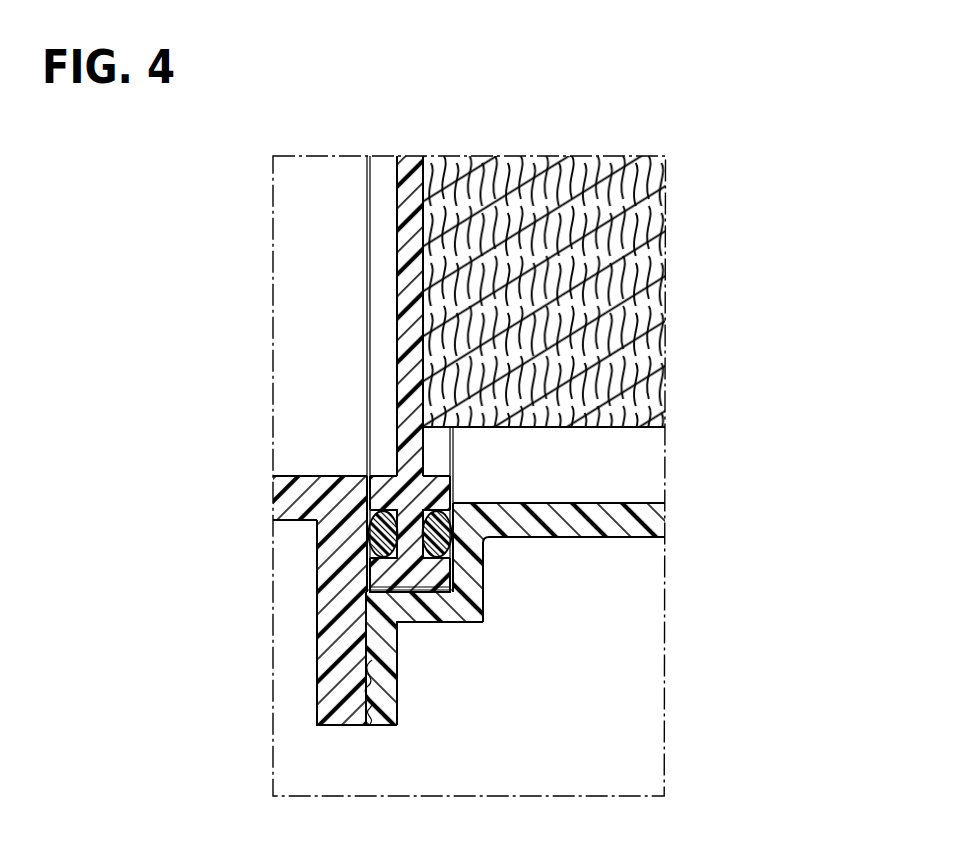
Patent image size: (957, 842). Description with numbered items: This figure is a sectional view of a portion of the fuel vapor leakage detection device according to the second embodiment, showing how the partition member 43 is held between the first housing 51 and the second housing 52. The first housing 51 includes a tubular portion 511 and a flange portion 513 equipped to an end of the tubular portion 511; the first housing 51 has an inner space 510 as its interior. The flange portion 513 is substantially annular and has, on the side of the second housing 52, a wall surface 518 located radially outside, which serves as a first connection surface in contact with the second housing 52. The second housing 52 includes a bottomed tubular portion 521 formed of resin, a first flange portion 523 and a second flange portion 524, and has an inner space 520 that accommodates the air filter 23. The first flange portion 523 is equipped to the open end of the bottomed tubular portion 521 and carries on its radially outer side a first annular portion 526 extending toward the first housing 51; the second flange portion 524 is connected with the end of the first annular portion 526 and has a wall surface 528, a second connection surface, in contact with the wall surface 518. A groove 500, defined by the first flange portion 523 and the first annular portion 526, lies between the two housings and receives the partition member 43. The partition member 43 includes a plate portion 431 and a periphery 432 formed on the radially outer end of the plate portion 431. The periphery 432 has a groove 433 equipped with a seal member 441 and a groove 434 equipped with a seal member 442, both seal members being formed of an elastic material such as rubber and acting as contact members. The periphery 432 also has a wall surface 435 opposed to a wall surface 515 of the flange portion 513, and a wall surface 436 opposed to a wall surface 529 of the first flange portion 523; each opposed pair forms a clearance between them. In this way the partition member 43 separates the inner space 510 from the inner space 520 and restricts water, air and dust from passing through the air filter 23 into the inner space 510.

The air filter 23 is at (641, 266).
The partition member 43 is at (392, 185).
The plate portion 431 is at (397, 310).
The periphery 432 is at (369, 476).
The groove 433 is at (368, 536).
The groove 434 is at (446, 520).
The wall surface 435 is at (365, 567).
The wall surface 436 is at (453, 578).
The seal member 441 is at (370, 545).
The seal member 442 is at (426, 473).
The groove 500 is at (452, 592).
The first housing 51 is at (288, 470).
The inner space 510 is at (300, 347).
The tubular portion 511 is at (295, 503).
The flange portion 513 is at (335, 632).
The wall surface 515 is at (365, 593).
The wall surface 518 is at (360, 673).
The second housing 52 is at (650, 497).
The inner space 520 is at (618, 530).
The bottomed tubular portion 521 is at (645, 526).
The first flange portion 523 is at (455, 543).
The second flange portion 524 is at (380, 692).
The first annular portion 526 is at (432, 612).
The wall surface 528 is at (380, 710).
The wall surface 529 is at (453, 558).